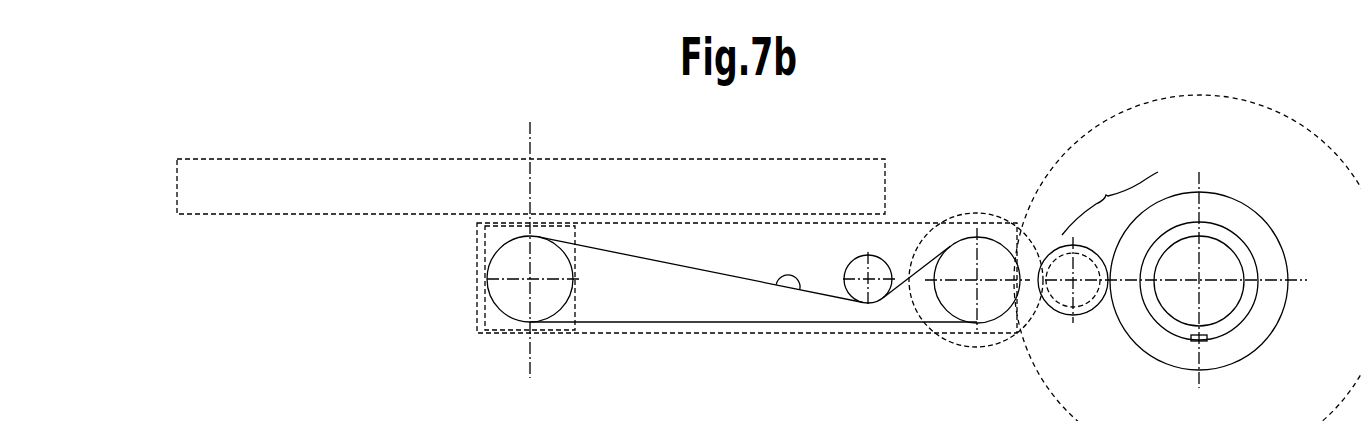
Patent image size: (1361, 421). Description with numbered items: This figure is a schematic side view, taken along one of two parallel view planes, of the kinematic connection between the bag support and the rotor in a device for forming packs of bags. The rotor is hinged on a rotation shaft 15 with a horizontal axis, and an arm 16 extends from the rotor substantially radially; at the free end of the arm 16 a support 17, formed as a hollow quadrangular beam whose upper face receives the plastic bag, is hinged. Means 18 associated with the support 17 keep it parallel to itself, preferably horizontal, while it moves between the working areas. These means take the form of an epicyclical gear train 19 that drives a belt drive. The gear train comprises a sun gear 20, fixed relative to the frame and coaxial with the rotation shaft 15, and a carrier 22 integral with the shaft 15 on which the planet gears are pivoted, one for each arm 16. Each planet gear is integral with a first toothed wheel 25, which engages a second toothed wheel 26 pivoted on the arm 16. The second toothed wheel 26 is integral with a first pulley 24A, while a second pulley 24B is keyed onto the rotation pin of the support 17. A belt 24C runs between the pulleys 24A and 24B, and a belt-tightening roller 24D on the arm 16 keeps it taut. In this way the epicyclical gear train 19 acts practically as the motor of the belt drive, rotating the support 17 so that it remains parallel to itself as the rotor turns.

The rotation shaft 15 is at (1220, 258).
The arm 16 is at (632, 335).
The support 17 is at (313, 157).
The means maintaining the support in position parallel to itself 18 is at (970, 183).
The epicyclical gear train 19 is at (1099, 190).
The sun gear 20 is at (1243, 345).
The carrier 22 is at (1060, 316).
The first pulley 24A is at (987, 253).
The second pulley 24B is at (500, 291).
The belt 24C is at (796, 291).
The belt-tightening roller 24D is at (877, 257).
The first toothed wheel 25 is at (1085, 297).
The second toothed wheel 26 is at (918, 316).